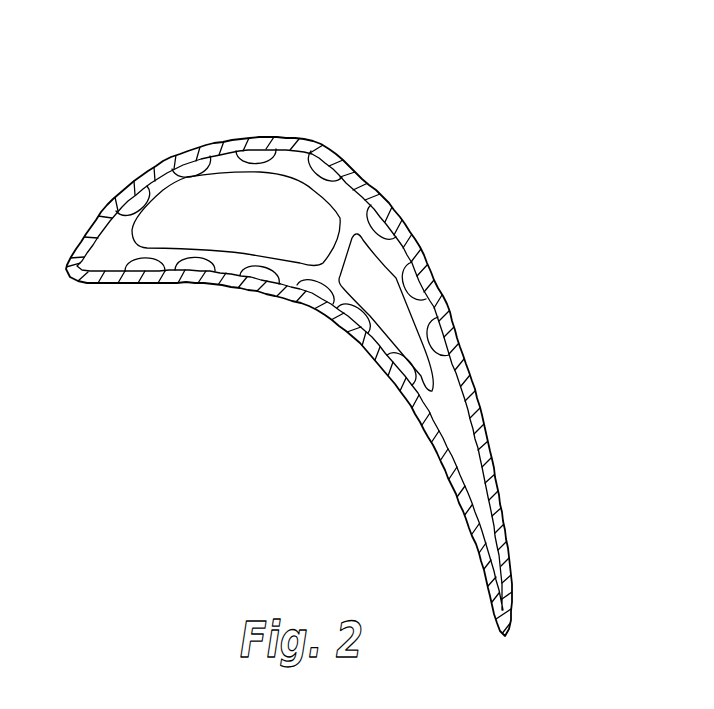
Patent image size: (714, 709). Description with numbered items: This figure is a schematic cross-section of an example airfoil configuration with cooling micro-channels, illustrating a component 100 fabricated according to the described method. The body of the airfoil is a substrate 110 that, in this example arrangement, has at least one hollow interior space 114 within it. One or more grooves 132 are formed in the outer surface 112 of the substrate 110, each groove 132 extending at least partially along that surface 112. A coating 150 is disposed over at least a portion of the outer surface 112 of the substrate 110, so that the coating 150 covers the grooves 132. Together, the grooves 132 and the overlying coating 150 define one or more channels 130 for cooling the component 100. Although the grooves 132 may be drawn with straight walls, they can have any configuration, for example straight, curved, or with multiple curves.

The component 100 is at (318, 350).
The substrate 110 is at (353, 204).
The outer surface 112 is at (472, 412).
The hollow interior space 114 is at (282, 210).
The channel 130 is at (200, 158).
The groove 132 is at (363, 322).
The coating 150 is at (434, 292).